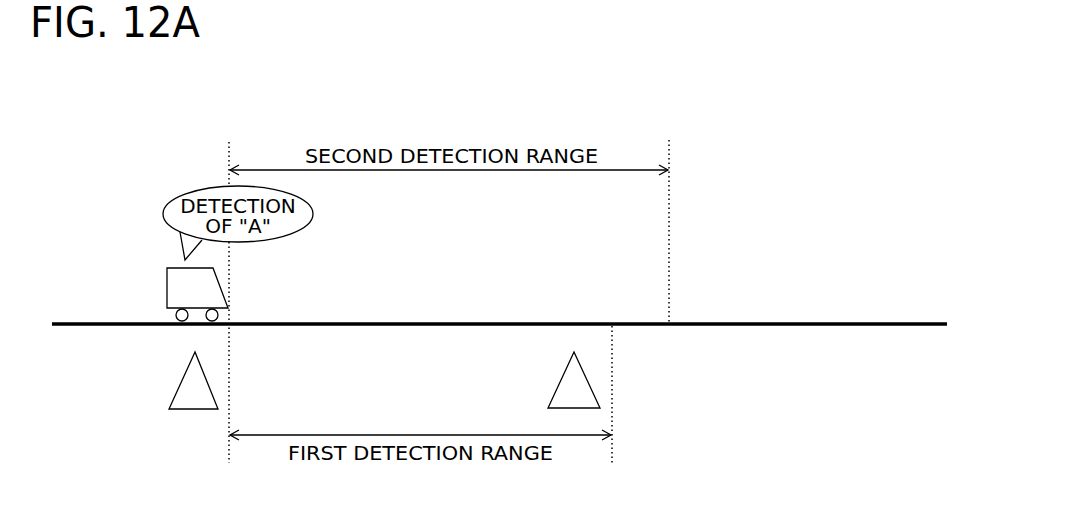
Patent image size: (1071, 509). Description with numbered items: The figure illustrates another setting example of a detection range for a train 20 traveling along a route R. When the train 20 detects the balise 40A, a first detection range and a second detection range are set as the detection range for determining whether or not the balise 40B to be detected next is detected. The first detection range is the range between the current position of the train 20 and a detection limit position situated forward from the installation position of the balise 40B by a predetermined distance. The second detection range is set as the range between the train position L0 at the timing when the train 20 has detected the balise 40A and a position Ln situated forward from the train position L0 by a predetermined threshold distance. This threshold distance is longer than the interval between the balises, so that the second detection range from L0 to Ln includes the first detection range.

The train 20 is at (165, 290).
The balise 40A is at (177, 393).
The balise 40B is at (589, 383).
The road R is at (748, 322).
The train position L0 is at (229, 289).
The position Ln is at (666, 219).